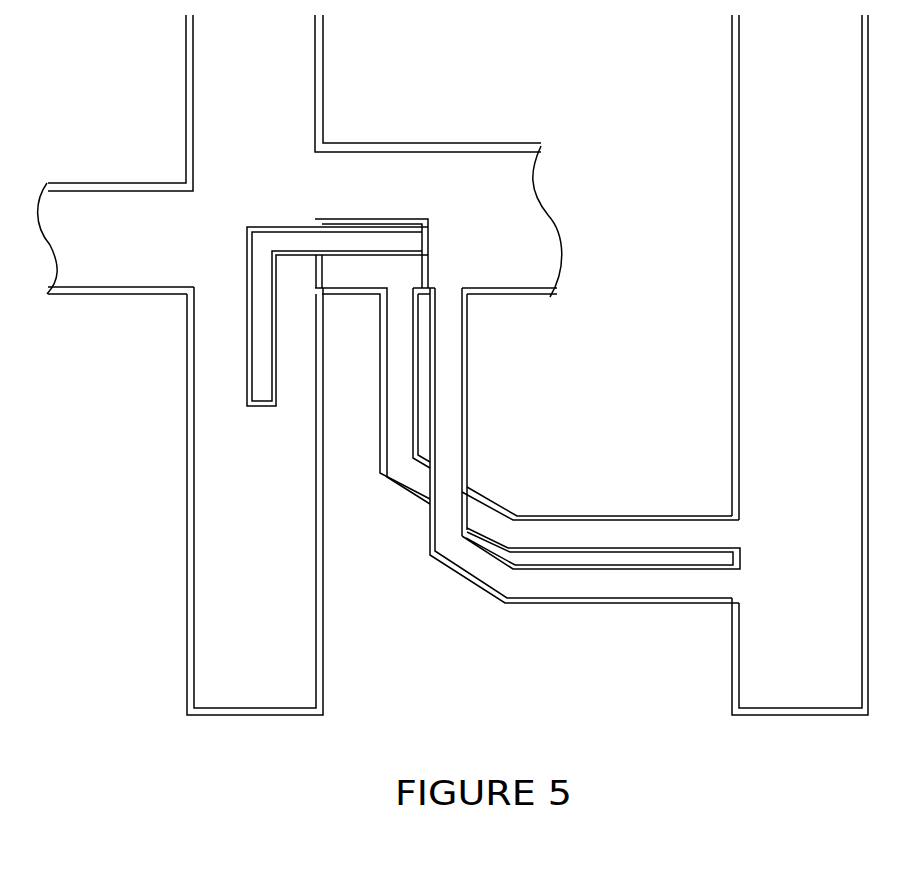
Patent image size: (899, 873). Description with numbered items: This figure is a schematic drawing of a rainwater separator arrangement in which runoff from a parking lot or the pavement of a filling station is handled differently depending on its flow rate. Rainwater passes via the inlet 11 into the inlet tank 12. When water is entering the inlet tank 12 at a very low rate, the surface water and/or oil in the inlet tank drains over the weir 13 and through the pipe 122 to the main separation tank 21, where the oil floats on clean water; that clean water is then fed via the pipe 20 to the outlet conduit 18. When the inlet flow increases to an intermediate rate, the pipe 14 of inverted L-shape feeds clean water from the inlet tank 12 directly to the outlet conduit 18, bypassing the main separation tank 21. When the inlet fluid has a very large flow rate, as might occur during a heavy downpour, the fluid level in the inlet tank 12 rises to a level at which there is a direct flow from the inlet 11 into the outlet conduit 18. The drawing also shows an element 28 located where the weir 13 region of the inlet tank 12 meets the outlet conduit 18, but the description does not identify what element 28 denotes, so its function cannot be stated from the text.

The inlet 11 is at (116, 154).
The inlet tank 12 is at (255, 501).
The weir 13 is at (228, 185).
The pipe of inverted L-shape 14 is at (255, 382).
The outlet conduit 18 is at (438, 259).
The pipe 20 is at (600, 420).
The main separation tank 21 is at (800, 365).
The chamber 28 is at (414, 156).
The pipe 122 is at (585, 445).